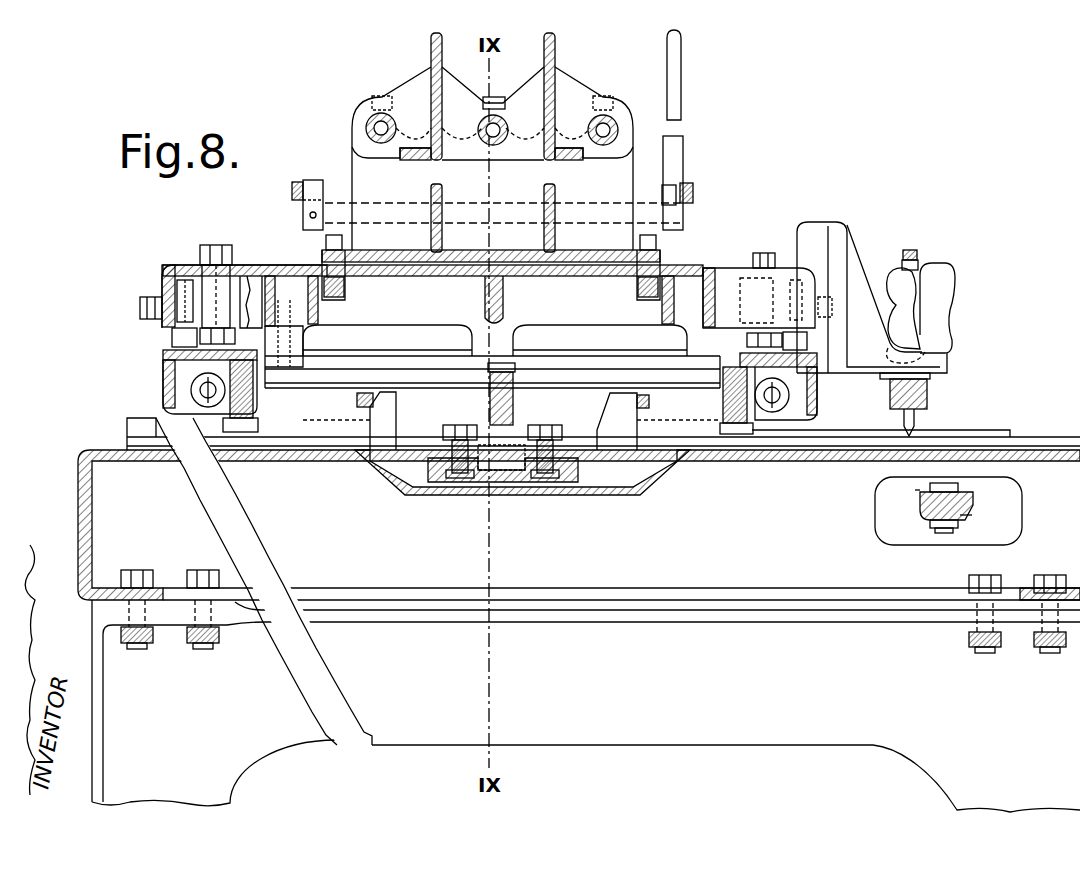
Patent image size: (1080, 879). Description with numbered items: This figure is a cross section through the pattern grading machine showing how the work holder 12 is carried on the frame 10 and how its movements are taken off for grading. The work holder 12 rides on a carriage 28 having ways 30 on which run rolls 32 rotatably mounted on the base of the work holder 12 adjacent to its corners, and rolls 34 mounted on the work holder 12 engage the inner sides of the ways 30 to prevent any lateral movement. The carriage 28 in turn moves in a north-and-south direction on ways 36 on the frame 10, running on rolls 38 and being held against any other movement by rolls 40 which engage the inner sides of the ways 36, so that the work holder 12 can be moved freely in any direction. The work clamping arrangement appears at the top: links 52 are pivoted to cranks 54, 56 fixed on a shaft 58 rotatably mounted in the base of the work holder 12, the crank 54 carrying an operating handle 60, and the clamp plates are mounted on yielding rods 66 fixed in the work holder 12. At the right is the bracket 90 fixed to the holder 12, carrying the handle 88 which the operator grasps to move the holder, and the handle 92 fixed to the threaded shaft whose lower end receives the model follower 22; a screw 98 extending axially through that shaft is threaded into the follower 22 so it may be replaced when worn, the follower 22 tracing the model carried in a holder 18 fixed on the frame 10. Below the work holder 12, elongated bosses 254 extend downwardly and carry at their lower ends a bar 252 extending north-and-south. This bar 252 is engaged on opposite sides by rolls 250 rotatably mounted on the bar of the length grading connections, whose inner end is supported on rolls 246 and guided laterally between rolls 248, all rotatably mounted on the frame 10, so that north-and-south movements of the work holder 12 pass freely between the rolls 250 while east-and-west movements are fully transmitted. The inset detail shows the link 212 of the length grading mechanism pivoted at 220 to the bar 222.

The frame 10 is at (82, 508).
The work holder 12 is at (565, 92).
The holder 18 is at (1040, 445).
The model follower 22 is at (912, 436).
The carriage 28 is at (162, 358).
The ways 30 is at (175, 338).
The rolls 32 is at (180, 282).
The rolls 34 is at (236, 334).
The ways 36 is at (132, 428).
The rolls 38 is at (194, 378).
The rolls 40 is at (260, 426).
The links 52 is at (292, 182).
The crank 54 is at (664, 186).
The crank 56 is at (313, 180).
The shaft 58 is at (594, 208).
The operating handle 60 is at (678, 72).
The rods 66 is at (372, 124).
The handle 88 is at (950, 266).
The bracket 90 is at (850, 232).
The handle 92 is at (893, 277).
The screw 98 is at (910, 250).
The link 212 is at (968, 500).
The pivot 220 is at (922, 496).
The bar 222 is at (965, 518).
The rolls 246 is at (516, 442).
The rolls 248 is at (566, 440).
The rolls 250 is at (492, 372).
The bar 252 is at (445, 372).
The bosses 254 is at (308, 350).